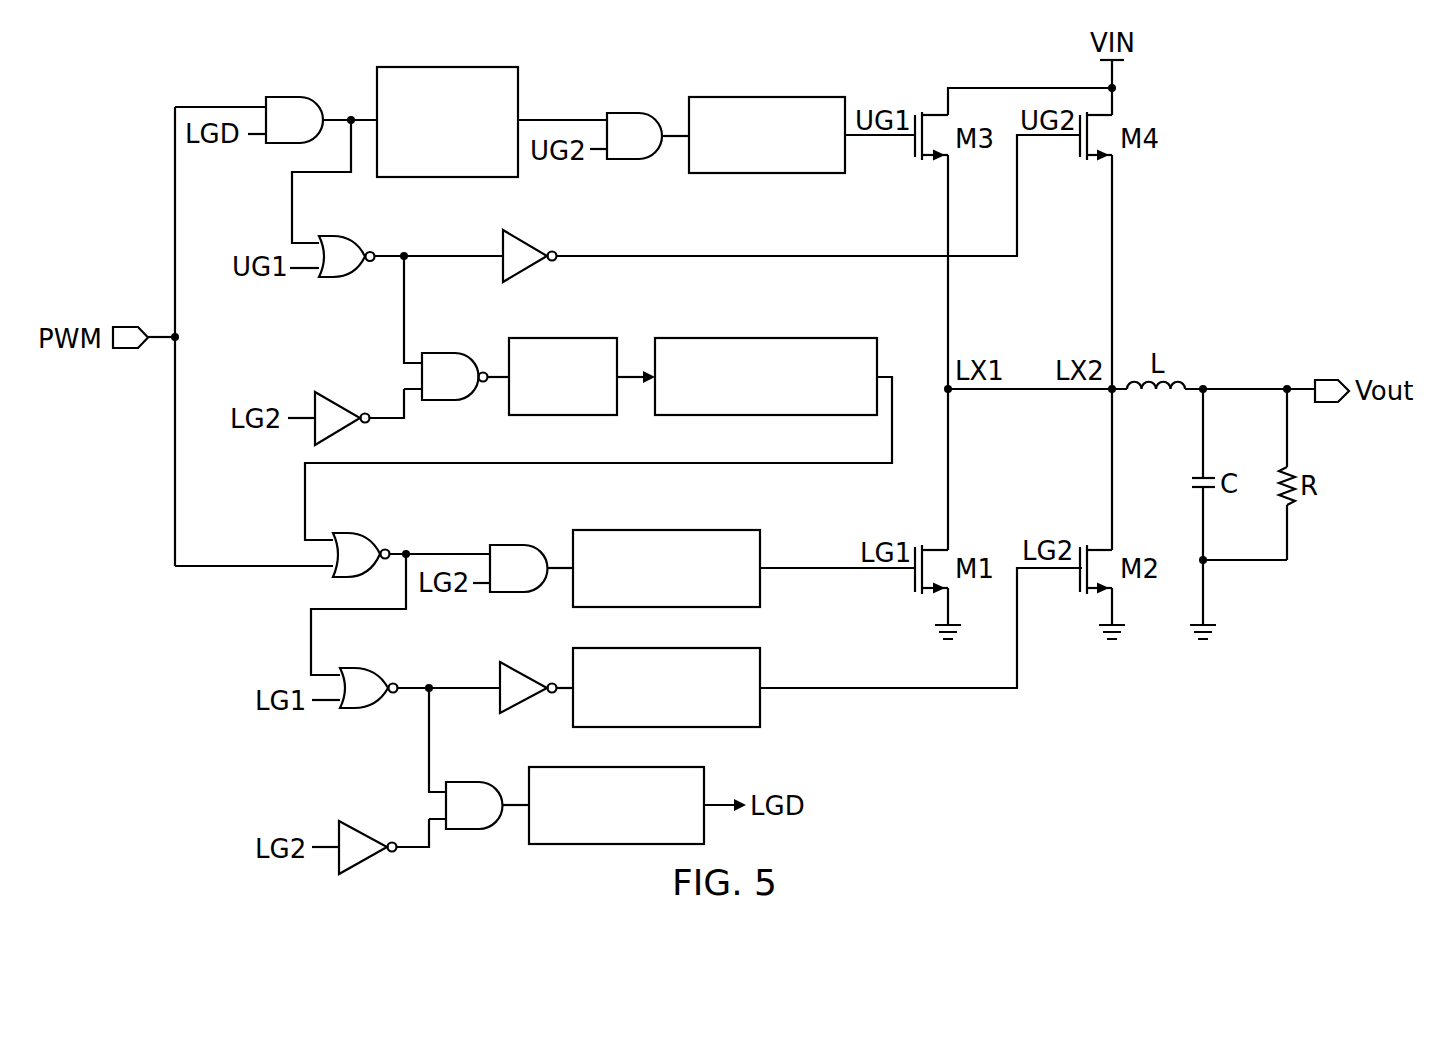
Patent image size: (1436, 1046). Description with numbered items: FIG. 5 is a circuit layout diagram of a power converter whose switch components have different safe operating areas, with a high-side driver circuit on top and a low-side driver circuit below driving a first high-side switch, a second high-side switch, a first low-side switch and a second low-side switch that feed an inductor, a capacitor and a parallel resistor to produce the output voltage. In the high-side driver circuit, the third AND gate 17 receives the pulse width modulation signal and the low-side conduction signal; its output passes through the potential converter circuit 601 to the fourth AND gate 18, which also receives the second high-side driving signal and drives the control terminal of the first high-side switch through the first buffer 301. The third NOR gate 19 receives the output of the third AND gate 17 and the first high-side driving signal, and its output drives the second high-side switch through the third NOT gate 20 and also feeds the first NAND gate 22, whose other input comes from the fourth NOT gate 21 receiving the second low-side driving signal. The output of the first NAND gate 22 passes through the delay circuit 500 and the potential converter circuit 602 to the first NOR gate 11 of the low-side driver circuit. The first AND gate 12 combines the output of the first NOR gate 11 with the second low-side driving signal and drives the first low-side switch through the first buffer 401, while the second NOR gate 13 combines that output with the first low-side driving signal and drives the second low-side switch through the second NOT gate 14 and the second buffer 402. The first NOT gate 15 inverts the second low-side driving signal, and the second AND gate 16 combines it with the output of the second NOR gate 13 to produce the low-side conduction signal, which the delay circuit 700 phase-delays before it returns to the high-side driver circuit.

The first NOR gate 11 is at (346, 533).
The first AND gate 12 is at (508, 545).
The second NOR gate 13 is at (375, 668).
The second NOT gate 14 is at (523, 665).
The first NOT gate 15 is at (364, 821).
The second AND gate 16 is at (464, 782).
The third AND gate 17 is at (284, 97).
The fourth AND gate 18 is at (624, 113).
The third NOR gate 19 is at (354, 238).
The third NOT gate 20 is at (524, 236).
The fourth NOT gate 21 is at (338, 392).
The first NAND gate 22 is at (440, 353).
The first buffer 301 is at (768, 97).
The first buffer 401 is at (763, 553).
The second buffer 402 is at (763, 672).
The delay circuit 500 is at (562, 338).
The potential converter circuit 601 is at (447, 67).
The potential converter circuit 602 is at (767, 338).
The delay circuit 700 is at (706, 788).